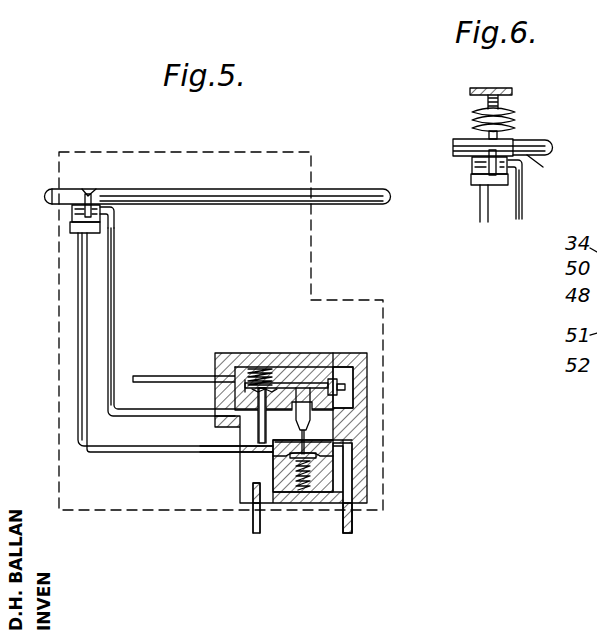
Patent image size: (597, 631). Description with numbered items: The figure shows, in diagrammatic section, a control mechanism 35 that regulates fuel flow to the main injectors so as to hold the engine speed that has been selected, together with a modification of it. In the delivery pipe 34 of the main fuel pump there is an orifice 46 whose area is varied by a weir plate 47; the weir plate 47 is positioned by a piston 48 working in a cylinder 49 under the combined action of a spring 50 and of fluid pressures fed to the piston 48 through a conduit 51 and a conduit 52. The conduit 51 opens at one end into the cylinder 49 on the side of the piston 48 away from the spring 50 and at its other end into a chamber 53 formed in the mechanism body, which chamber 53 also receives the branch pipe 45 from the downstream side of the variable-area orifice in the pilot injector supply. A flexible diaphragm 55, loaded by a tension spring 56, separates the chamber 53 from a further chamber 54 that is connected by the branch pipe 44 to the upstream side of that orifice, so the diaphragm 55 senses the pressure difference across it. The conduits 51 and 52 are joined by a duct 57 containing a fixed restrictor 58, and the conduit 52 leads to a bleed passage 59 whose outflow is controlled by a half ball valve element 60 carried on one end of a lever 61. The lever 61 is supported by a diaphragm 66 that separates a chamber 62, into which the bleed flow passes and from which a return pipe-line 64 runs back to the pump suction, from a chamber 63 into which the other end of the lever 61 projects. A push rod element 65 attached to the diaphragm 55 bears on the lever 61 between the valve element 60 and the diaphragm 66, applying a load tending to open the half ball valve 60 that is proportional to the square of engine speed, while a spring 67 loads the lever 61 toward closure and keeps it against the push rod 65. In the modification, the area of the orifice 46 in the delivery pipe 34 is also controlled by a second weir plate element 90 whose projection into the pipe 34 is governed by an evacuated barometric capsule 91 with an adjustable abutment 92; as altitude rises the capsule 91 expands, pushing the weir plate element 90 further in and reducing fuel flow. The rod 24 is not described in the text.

In FIG. 5, the control rod 24 is at (339, 190).
In FIG. 5, the delivery pipe 34 is at (50, 191).
In FIG. 6, the delivery pipe 34 is at (541, 141).
In FIG. 5, the control mechanism 35 is at (97, 152).
In FIG. 5, the branch pipe 44 is at (251, 531).
In FIG. 5, the branch pipe 45 is at (350, 532).
In FIG. 5, the orifice 46 is at (86, 194).
In FIG. 6, the orifice 46 is at (453, 147).
In FIG. 5, the weir plate 47 is at (98, 190).
In FIG. 6, the weir plate 47 is at (549, 172).
In FIG. 5, the piston 48 is at (74, 228).
In FIG. 6, the piston 48 is at (476, 185).
In FIG. 5, the cylinder 49 is at (100, 230).
In FIG. 6, the cylinder 49 is at (500, 186).
In FIG. 5, the spring 50 is at (72, 213).
In FIG. 6, the spring 50 is at (472, 170).
In FIG. 5, the conduit 51 is at (78, 307).
In FIG. 6, the conduit 51 is at (480, 214).
In FIG. 5, the conduit 52 is at (118, 307).
In FIG. 6, the conduit 52 is at (523, 201).
In FIG. 5, the chamber 53 is at (243, 463).
In FIG. 5, the chamber 54 is at (286, 484).
In FIG. 5, the flexible diaphragm 55 is at (320, 457).
In FIG. 5, the tension spring 56 is at (311, 491).
In FIG. 5, the duct 57 is at (215, 420).
In FIG. 5, the fixed restrictor 58 is at (228, 447).
In FIG. 5, the bleed passage 59 is at (215, 396).
In FIG. 5, the half ball valve element 60 is at (309, 383).
In FIG. 5, the lever 61 is at (303, 370).
In FIG. 5, the chamber 62 is at (241, 380).
In FIG. 5, the chamber 63 is at (346, 386).
In FIG. 5, the return pipe-line 64 is at (136, 378).
In FIG. 5, the push rod element 65 is at (310, 406).
In FIG. 5, the diaphragm 66 is at (368, 372).
In FIG. 5, the spring 67 is at (266, 370).
In FIG. 6, the second weir plate element 90 is at (488, 137).
In FIG. 6, the barometric capsule 91 is at (515, 112).
In FIG. 6, the adjustable abutment 92 is at (497, 90).